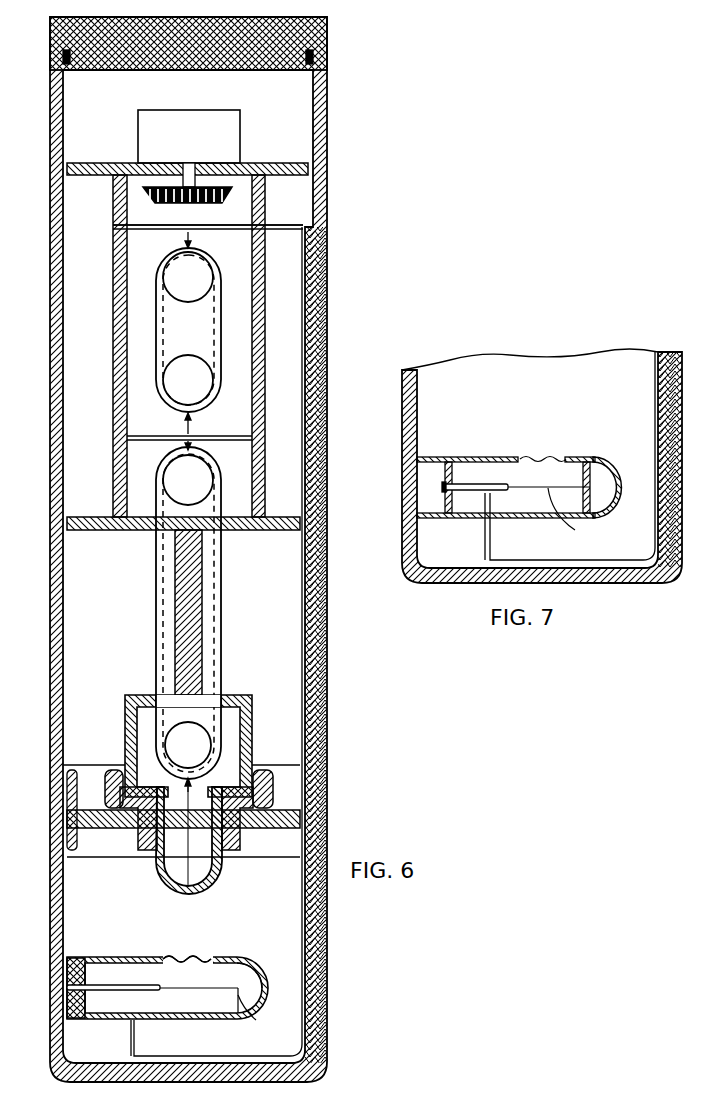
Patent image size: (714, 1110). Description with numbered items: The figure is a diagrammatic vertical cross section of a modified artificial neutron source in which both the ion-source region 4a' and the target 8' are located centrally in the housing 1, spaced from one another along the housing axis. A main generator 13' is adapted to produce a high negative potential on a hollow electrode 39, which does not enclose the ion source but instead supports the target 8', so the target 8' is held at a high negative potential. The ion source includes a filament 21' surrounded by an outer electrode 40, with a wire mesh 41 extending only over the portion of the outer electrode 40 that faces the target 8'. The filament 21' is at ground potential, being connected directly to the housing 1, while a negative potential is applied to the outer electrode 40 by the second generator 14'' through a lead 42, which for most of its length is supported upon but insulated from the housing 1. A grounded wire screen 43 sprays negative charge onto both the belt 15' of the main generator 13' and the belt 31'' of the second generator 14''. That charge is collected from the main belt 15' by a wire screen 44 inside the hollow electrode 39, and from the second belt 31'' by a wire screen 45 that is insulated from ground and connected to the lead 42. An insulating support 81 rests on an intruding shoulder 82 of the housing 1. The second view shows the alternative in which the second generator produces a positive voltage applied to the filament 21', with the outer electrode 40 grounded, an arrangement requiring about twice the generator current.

In FIG. 6, the housing 1 is at (52, 462).
In FIG. 6, the lead 42 is at (301, 890).
In FIG. 7, the lead 42 is at (655, 368).
In FIG. 6, the second generator 14'' is at (230, 330).
In FIG. 6, the belt 31'' is at (185, 328).
In FIG. 6, the wire screen 45 is at (189, 243).
In FIG. 6, the grounded wire screen 43 is at (190, 432).
In FIG. 6, the belt 15' is at (210, 613).
In FIG. 6, the hollow electrode 39 is at (250, 730).
In FIG. 6, the main generator 13' is at (326, 610).
In FIG. 6, the wire screen 44 is at (190, 786).
In FIG. 6, the insulating support 81 is at (260, 805).
In FIG. 6, the intruding shoulder 82 is at (300, 810).
In FIG. 6, the target 8' is at (186, 845).
In FIG. 6, the outer electrode 40 is at (222, 1018).
In FIG. 7, the outer electrode 40 is at (595, 459).
In FIG. 6, the wire mesh 41 is at (183, 957).
In FIG. 6, the ion-source region 4a' is at (251, 960).
In FIG. 6, the filament 21' is at (176, 1010).
In FIG. 7, the filament 21' is at (525, 514).